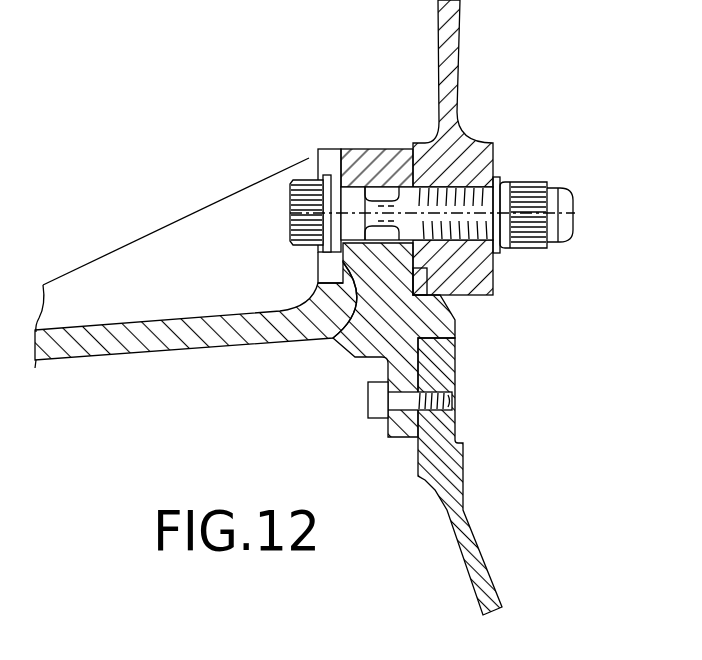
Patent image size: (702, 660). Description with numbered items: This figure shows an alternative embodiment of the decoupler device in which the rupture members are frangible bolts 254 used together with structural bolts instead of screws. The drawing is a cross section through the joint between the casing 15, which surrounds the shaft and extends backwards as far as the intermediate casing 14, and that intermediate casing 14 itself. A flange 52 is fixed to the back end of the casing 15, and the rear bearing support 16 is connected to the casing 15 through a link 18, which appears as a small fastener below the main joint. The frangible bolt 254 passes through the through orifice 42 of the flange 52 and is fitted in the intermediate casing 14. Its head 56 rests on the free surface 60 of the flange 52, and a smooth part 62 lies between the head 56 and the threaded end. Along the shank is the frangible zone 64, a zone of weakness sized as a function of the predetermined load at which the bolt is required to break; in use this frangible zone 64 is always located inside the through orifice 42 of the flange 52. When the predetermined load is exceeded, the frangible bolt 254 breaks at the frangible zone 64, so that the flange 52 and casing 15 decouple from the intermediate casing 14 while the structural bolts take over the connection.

The intermediate casing 14 is at (458, 38).
The casing 15 is at (83, 357).
The support 16 is at (482, 558).
The link 18 is at (377, 410).
The through orifice 42 is at (400, 187).
The flange 52 is at (330, 337).
The head 56 is at (310, 197).
The free surface 60 is at (320, 264).
The smooth part 62 is at (353, 200).
The frangible zone 64 is at (402, 238).
The frangible bolt 254 is at (262, 217).